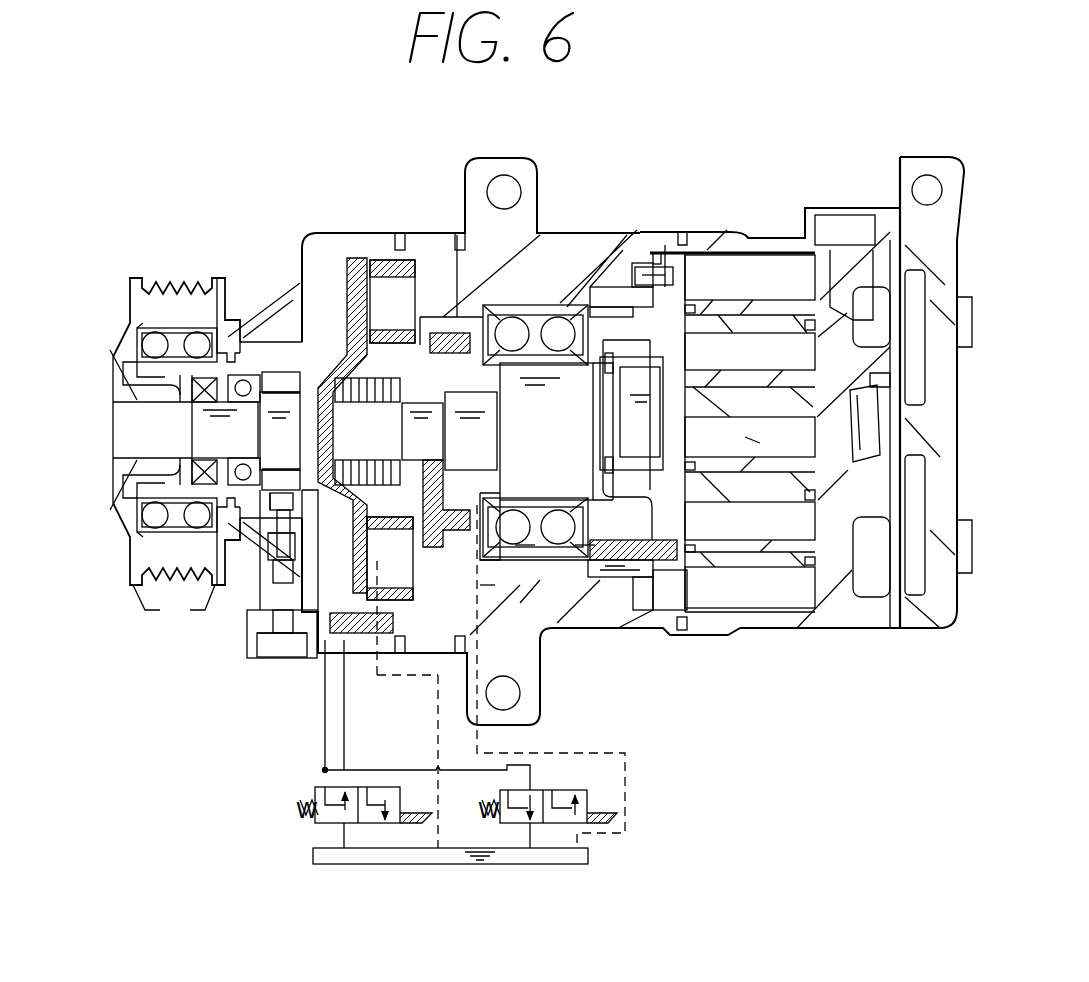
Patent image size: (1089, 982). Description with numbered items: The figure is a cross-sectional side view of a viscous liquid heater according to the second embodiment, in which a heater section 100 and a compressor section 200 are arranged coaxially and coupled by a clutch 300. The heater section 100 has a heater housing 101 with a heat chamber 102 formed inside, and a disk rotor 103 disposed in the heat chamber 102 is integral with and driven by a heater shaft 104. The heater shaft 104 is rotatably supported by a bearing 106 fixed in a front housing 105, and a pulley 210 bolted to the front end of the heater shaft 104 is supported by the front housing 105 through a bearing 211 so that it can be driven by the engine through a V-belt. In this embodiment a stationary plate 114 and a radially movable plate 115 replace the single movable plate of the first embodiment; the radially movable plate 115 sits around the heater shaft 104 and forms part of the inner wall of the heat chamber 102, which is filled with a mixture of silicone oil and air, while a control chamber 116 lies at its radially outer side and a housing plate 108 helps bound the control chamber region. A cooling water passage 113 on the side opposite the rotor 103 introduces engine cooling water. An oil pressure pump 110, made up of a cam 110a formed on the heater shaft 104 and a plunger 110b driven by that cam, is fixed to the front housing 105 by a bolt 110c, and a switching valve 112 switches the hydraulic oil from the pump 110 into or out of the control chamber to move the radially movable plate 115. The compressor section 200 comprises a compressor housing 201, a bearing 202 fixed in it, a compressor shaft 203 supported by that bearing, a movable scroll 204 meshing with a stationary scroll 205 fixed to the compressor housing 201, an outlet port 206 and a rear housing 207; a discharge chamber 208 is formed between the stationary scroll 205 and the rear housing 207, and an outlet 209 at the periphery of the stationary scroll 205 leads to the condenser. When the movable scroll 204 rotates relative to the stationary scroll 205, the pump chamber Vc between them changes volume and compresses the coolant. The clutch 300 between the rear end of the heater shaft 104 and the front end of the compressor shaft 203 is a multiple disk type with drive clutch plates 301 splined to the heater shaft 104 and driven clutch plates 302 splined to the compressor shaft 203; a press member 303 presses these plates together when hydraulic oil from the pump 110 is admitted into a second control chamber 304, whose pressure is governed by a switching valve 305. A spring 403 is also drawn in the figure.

The heater section 100 is at (384, 230).
The heater housing 101 is at (423, 227).
The heat chamber 102 is at (335, 310).
The disk rotor 103 is at (318, 530).
The heater shaft 104 is at (132, 430).
The front housing 105 is at (290, 320).
The bearing 106 is at (215, 560).
The housing plate 108 is at (485, 585).
The oil pressure pump 110 is at (270, 645).
The cam 110a is at (248, 535).
The plunger 110b is at (258, 600).
The bolt 110c is at (283, 665).
The switching valve 112 is at (300, 818).
The cooling water passage 113 is at (585, 545).
The stationary plate 114 is at (520, 545).
The radially movable plate 115 is at (355, 632).
The control chamber 116 is at (393, 650).
The compressor section 200 is at (712, 228).
The compressor housing 201 is at (585, 295).
The bearing 202 is at (530, 305).
The compressor shaft 203 is at (543, 423).
The movable scroll 204 is at (660, 280).
The stationary scroll 205 is at (772, 237).
The outlet port 206 is at (820, 442).
The rear housing 207 is at (955, 270).
The discharge chamber 208 is at (912, 352).
The outlet 209 is at (848, 230).
The pulley 210 is at (175, 285).
The bearing 211 is at (138, 538).
The clutch 300 is at (468, 262).
The drive clutch plates 301 is at (320, 330).
The driven clutch plates 302 is at (245, 320).
The press member 303 is at (540, 605).
The second control chamber 304 is at (490, 545).
The switching valve 305 is at (562, 790).
The spring 403 is at (300, 625).
The pump chamber Vc is at (753, 440).